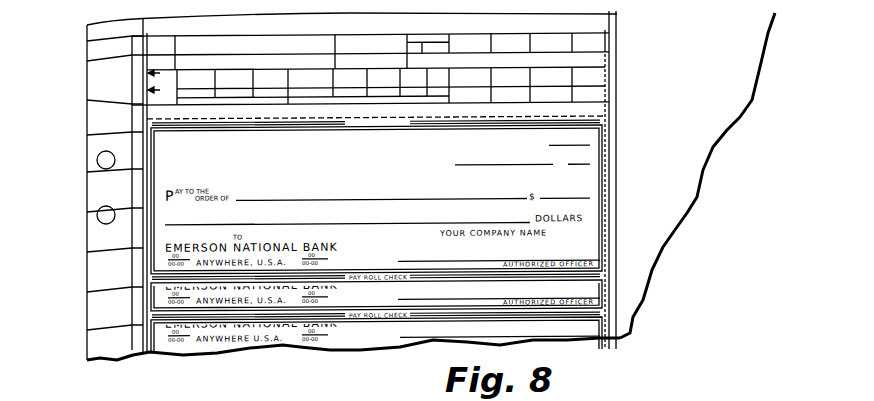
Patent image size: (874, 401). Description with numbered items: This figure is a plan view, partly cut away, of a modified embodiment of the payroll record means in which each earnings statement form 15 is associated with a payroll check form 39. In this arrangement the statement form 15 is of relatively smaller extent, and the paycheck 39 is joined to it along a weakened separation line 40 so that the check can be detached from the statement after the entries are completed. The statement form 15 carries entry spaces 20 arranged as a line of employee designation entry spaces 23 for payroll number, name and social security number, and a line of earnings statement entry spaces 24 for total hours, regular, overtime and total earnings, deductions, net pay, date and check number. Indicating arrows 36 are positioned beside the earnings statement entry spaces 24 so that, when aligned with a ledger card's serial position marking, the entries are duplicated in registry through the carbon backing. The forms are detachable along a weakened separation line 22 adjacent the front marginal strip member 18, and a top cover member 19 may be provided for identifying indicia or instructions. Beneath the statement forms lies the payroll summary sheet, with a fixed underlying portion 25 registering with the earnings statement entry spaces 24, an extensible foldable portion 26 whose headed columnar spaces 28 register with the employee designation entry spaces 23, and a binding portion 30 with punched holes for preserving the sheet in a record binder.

The earnings statement form 15 is at (597, 109).
The front marginal strip member 18 is at (613, 335).
The top cover member 19 is at (633, 280).
The entry spaces 20 is at (478, 108).
The weakened separation line 22 is at (607, 221).
The employee designation entry spaces 23 is at (597, 58).
The earnings statement entry spaces 24 is at (597, 83).
The fixed underlying portion 25 is at (595, 23).
The extensible portion 26 is at (100, 78).
The columnar spaces 28 is at (376, 50).
The binding portion 30 is at (100, 264).
The indicating arrows 36 is at (155, 73).
The paycheck form 39 is at (587, 176).
The weakened separation line 40 is at (278, 124).